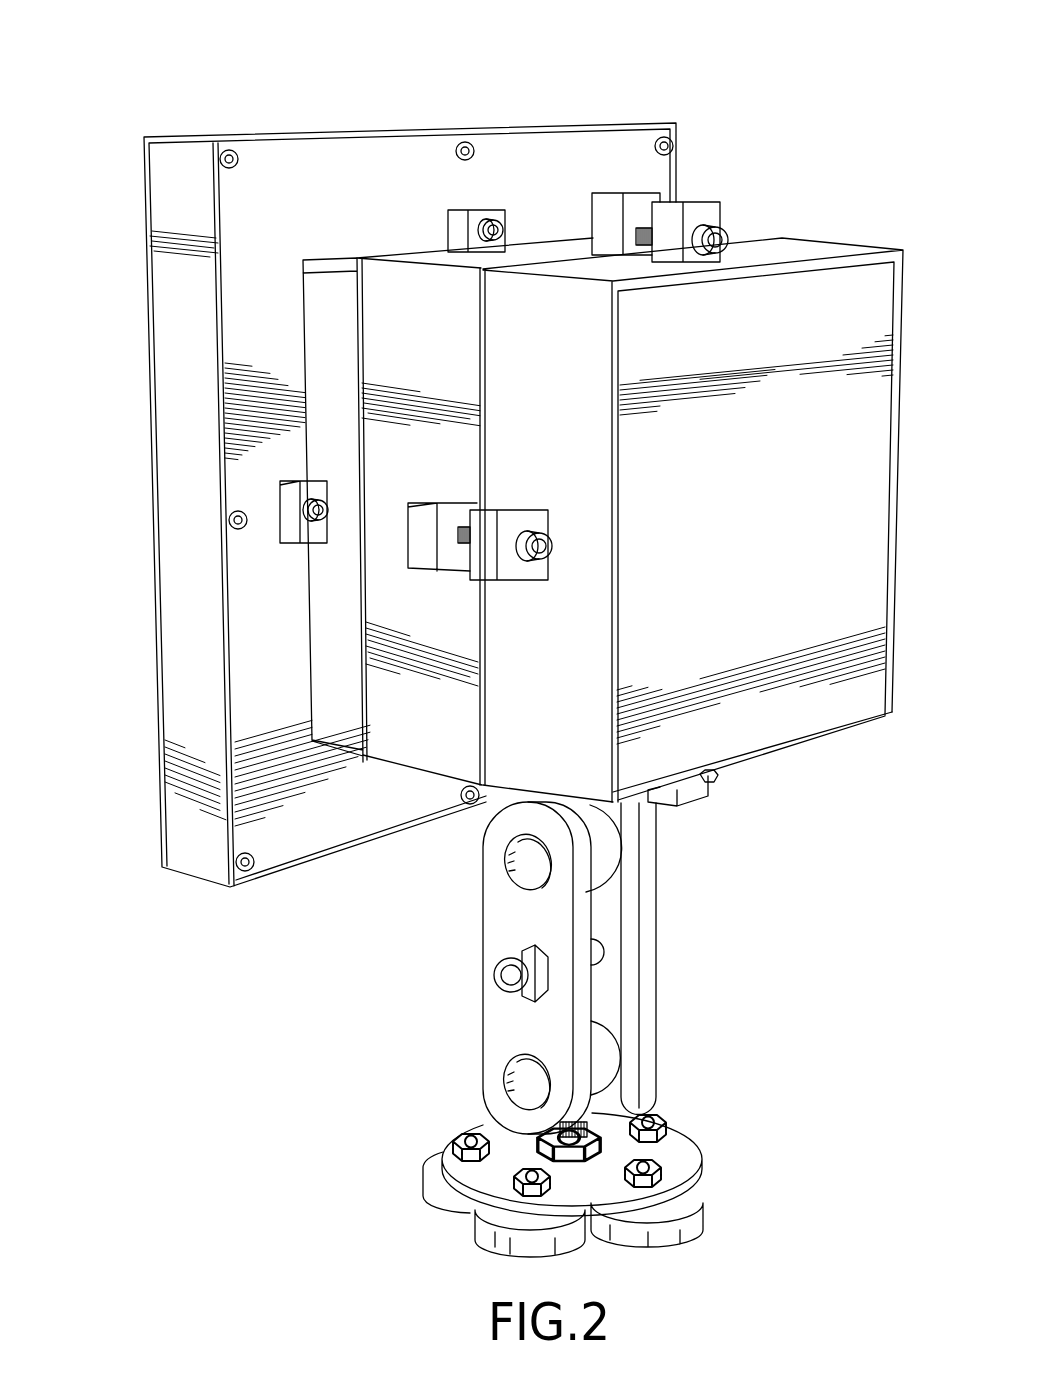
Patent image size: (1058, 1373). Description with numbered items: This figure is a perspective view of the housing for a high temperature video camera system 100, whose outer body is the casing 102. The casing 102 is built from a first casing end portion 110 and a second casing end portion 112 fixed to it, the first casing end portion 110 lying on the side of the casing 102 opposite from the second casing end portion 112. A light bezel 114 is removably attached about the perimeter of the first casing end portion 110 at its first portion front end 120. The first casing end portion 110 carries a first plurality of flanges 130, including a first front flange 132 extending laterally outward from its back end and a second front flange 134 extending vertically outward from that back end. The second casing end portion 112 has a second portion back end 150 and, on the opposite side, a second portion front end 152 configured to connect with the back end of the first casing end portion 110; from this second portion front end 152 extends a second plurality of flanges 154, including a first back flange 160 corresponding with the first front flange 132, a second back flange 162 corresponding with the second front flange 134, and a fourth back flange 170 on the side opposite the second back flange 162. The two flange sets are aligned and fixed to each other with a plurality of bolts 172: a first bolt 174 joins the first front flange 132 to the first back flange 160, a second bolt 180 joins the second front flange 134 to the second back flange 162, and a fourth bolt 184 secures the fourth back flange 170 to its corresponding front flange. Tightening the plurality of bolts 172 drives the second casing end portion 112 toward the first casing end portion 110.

The high temperature video camera system 100 is at (499, 628).
The casing 102 is at (718, 520).
The first casing end portion 110 is at (336, 511).
The second casing end portion 112 is at (778, 642).
The light bezel 114 is at (313, 170).
The first portion front end 120 is at (325, 658).
The first plurality of flanges 130 is at (354, 343).
The first front flange 132 is at (418, 546).
The second front flange 134 is at (635, 205).
The second portion back end 150 is at (632, 951).
The second portion front end 152 is at (497, 645).
The second plurality of flanges 154 is at (613, 528).
The first back flange 160 is at (487, 562).
The second back flange 162 is at (706, 212).
The fourth back flange 170 is at (684, 792).
The plurality of bolts 172 is at (688, 523).
The first bolt 174 is at (536, 534).
The second bolt 180 is at (716, 238).
The fourth bolt 184 is at (710, 780).